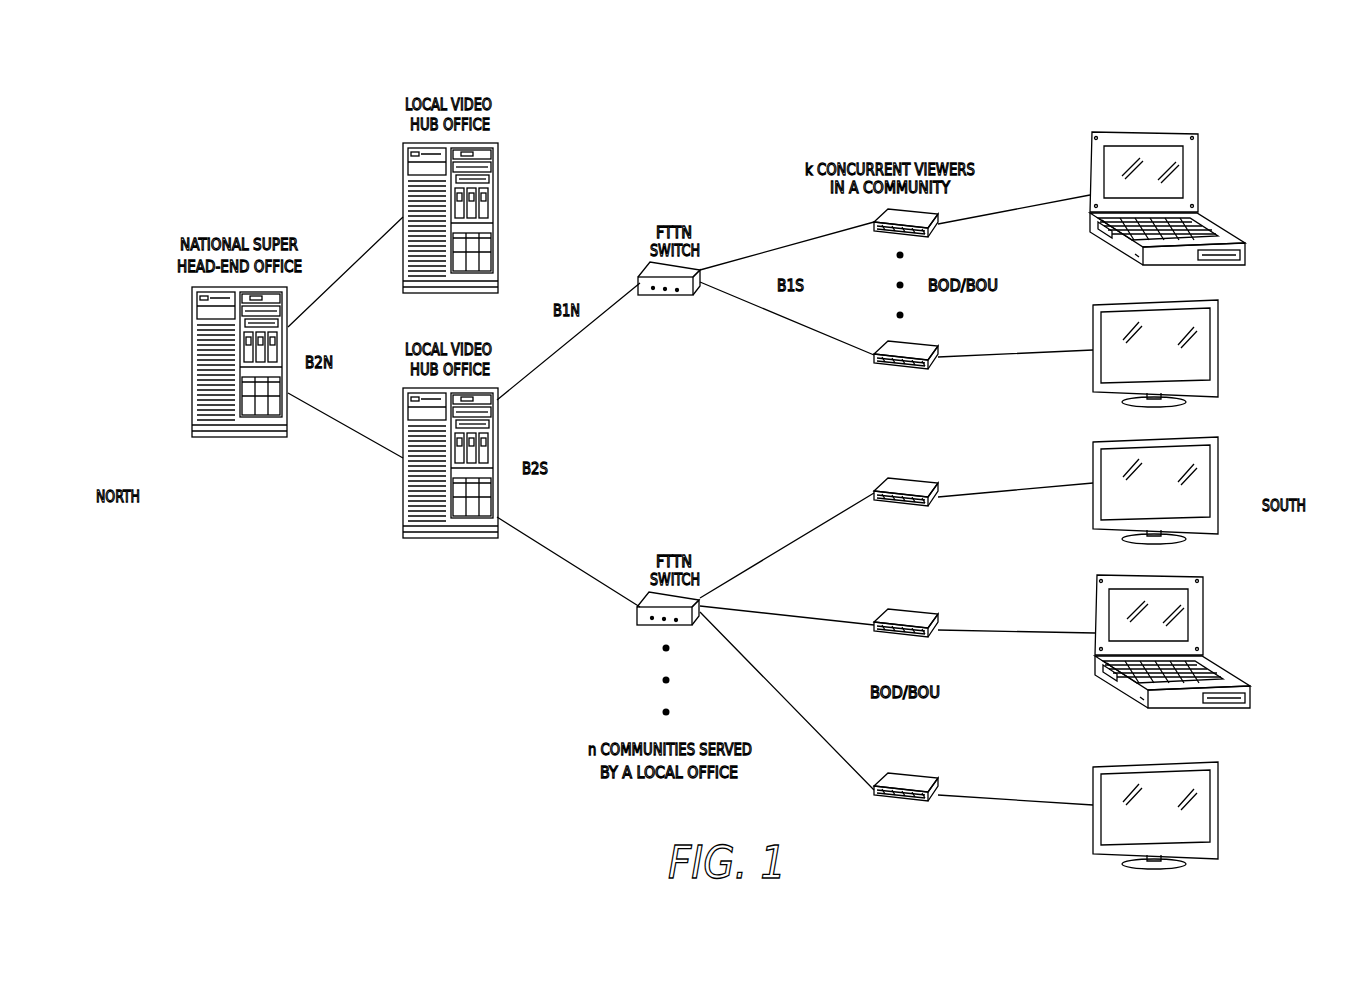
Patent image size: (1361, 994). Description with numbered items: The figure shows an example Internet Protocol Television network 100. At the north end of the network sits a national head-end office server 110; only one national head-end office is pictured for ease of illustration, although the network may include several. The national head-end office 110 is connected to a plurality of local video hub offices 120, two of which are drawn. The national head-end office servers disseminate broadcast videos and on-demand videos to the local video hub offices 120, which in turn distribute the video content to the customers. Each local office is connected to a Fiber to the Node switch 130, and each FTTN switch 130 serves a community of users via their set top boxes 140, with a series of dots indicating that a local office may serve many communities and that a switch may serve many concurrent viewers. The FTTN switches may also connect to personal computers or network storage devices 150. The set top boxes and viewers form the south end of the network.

The Internet Protocol Television (IPTV) network 100 is at (1239, 117).
The national head-end office server 110 is at (192, 295).
The local video hub office 120 is at (403, 395).
The Fiber to the Node (FTTN) switch 130 is at (637, 612).
The set top box 140 is at (940, 228).
The personal computer/network storage device 150 is at (1197, 190).